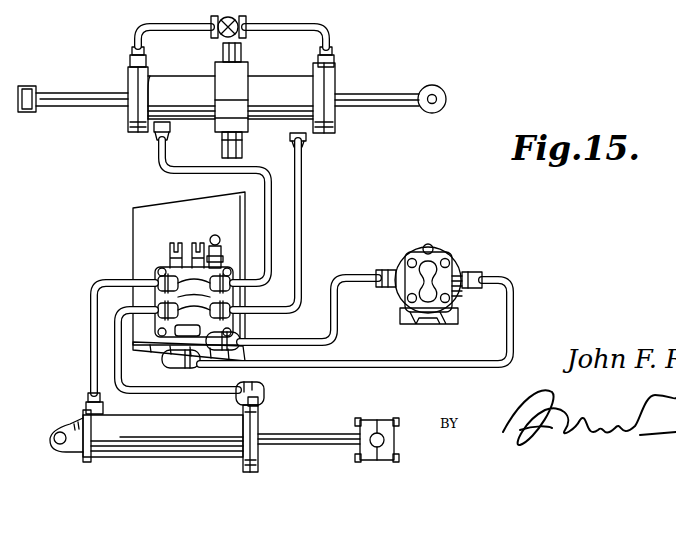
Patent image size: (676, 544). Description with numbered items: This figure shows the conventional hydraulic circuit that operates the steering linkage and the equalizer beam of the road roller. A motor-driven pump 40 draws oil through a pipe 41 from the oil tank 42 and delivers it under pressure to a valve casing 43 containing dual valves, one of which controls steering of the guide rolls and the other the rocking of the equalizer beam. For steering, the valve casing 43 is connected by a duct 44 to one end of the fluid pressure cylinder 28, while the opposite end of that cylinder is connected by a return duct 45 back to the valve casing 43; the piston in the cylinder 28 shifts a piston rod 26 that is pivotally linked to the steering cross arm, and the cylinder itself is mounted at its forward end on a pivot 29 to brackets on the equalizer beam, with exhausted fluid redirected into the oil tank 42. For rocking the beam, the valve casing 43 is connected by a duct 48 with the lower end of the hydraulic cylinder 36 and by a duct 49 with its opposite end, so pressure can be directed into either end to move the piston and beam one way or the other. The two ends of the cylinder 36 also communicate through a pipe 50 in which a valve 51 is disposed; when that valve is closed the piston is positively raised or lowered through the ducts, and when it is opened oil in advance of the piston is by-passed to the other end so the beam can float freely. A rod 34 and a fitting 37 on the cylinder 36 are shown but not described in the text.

The piston rod 26 is at (295, 437).
The fluid pressure cylinder 28 is at (143, 458).
The pivot 29 is at (64, 425).
The piston rod 34 is at (388, 97).
The hydraulic cylinder 36 is at (305, 86).
The mounting bracket 37 is at (245, 150).
The pump 40 is at (440, 258).
The pipe 41 is at (398, 368).
The oil tank 42 is at (140, 226).
The valve casing 43 is at (155, 275).
The duct 44 is at (118, 340).
The return duct 45 is at (92, 300).
The duct 48 is at (305, 181).
The duct 49 is at (272, 230).
The pipe 50 is at (170, 9).
The valve 51 is at (236, 22).